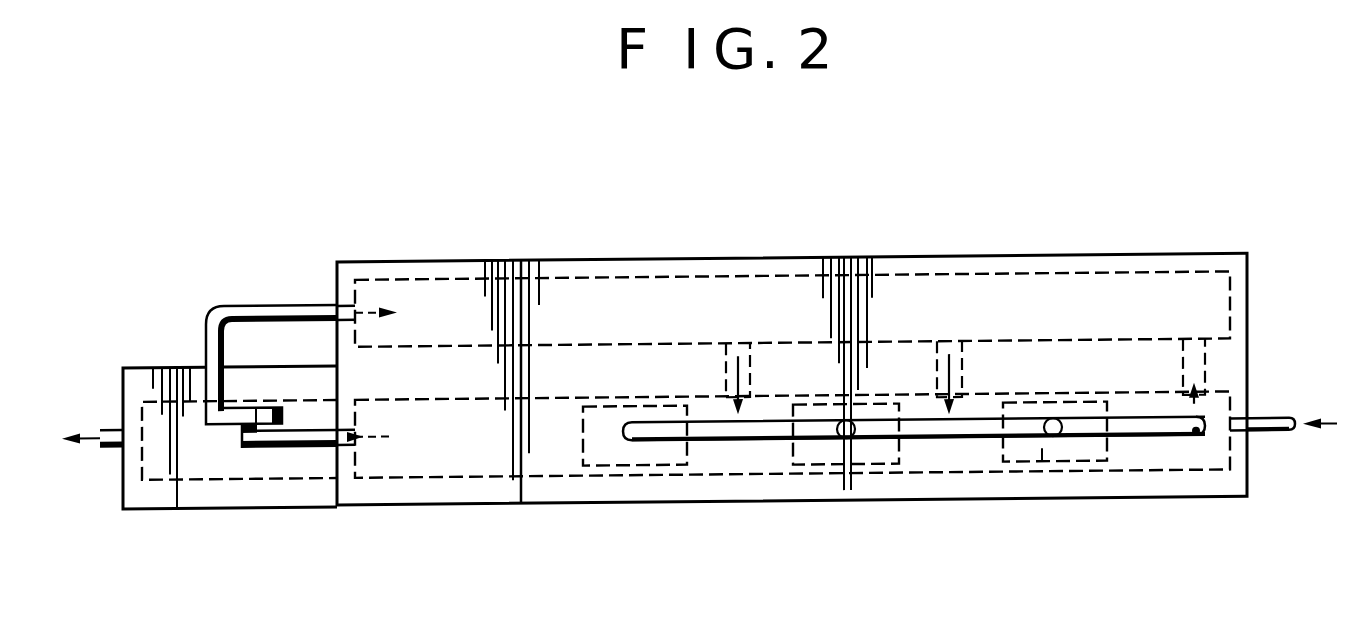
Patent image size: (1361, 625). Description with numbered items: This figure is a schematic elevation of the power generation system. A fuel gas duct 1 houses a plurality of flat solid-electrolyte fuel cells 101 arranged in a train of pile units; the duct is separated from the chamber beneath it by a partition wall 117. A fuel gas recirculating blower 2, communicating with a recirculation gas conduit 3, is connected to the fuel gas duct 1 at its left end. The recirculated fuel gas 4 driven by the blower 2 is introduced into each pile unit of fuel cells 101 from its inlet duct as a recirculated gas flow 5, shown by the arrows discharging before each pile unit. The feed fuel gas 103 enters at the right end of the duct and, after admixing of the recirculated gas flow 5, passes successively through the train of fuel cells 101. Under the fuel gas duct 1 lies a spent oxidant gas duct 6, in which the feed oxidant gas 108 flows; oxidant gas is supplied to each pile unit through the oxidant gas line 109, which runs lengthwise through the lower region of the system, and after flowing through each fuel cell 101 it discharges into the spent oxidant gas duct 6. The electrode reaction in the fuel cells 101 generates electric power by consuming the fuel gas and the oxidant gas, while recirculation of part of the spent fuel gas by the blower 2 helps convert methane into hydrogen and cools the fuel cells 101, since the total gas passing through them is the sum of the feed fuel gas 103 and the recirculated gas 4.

The fuel gas duct 1 is at (765, 463).
The fuel gas recirculating blower 2 is at (240, 428).
The recirculation gas conduit 3 is at (464, 283).
The recirculated fuel gas 4 is at (369, 312).
The recirculated gas flow 5 is at (752, 372).
The spent oxidant gas duct 6 is at (437, 465).
The fuel cell 101 is at (603, 460).
The feed fuel gas 103 is at (1328, 423).
The feed oxidant gas 108 is at (1213, 430).
The oxidant gas line 109 is at (1147, 440).
The partition wall 117 is at (589, 363).